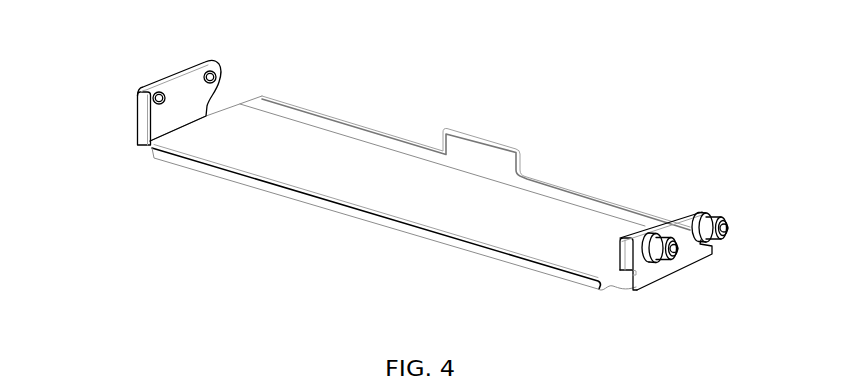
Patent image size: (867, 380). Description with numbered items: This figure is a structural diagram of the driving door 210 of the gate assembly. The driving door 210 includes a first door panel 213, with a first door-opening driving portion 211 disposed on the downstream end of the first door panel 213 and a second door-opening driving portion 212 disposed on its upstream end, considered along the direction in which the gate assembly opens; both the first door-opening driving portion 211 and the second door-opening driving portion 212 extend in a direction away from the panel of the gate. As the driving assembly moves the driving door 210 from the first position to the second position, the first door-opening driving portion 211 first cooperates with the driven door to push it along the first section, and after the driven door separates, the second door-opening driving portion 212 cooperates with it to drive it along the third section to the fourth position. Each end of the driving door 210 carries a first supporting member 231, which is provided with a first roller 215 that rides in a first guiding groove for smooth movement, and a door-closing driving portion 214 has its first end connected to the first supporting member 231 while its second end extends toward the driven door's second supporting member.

The driving door 210 is at (497, 90).
The first door-opening driving portion 211 is at (432, 236).
The second door-opening driving portion 212 is at (507, 160).
The first door panel 213 is at (313, 155).
The door-closing driving portion 214 is at (143, 127).
The first roller 215 is at (198, 62).
The first supporting member 231 is at (193, 83).